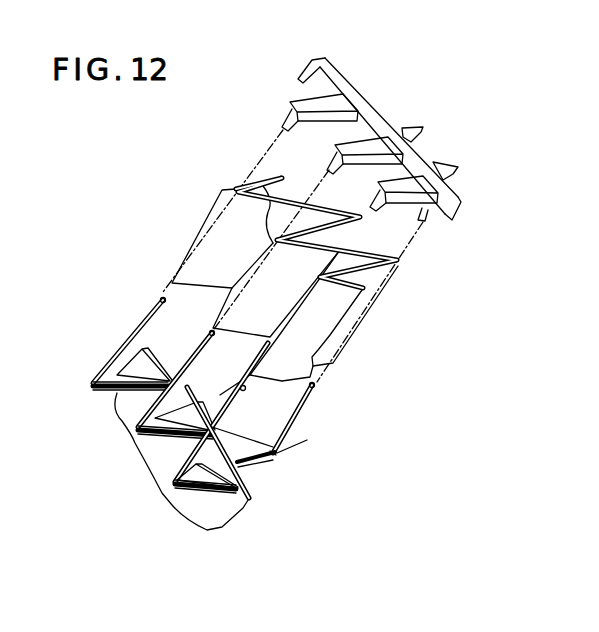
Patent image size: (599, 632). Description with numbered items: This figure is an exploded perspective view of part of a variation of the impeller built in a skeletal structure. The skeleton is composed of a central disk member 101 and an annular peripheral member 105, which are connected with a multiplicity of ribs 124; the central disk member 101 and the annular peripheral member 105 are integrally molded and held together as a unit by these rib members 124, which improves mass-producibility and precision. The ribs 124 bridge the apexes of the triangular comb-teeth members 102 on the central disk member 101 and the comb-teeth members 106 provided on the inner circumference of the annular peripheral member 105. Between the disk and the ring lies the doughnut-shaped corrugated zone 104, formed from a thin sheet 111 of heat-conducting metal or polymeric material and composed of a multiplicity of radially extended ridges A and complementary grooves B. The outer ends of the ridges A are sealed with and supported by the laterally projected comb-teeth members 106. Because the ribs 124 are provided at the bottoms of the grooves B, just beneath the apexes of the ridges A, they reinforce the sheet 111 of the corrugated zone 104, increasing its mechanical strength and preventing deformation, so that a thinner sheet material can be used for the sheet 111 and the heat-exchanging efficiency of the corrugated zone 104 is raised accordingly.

The central disk member 101 is at (227, 510).
The triangular comb-teeth members 102 is at (183, 420).
The corrugated zone 104 is at (222, 187).
The annular peripheral member 105 is at (377, 125).
The comb-teeth members 106 is at (362, 127).
The thin sheet 111 is at (350, 320).
The ribs 124 is at (325, 170).
The ridges A is at (255, 182).
The grooves B is at (356, 243).